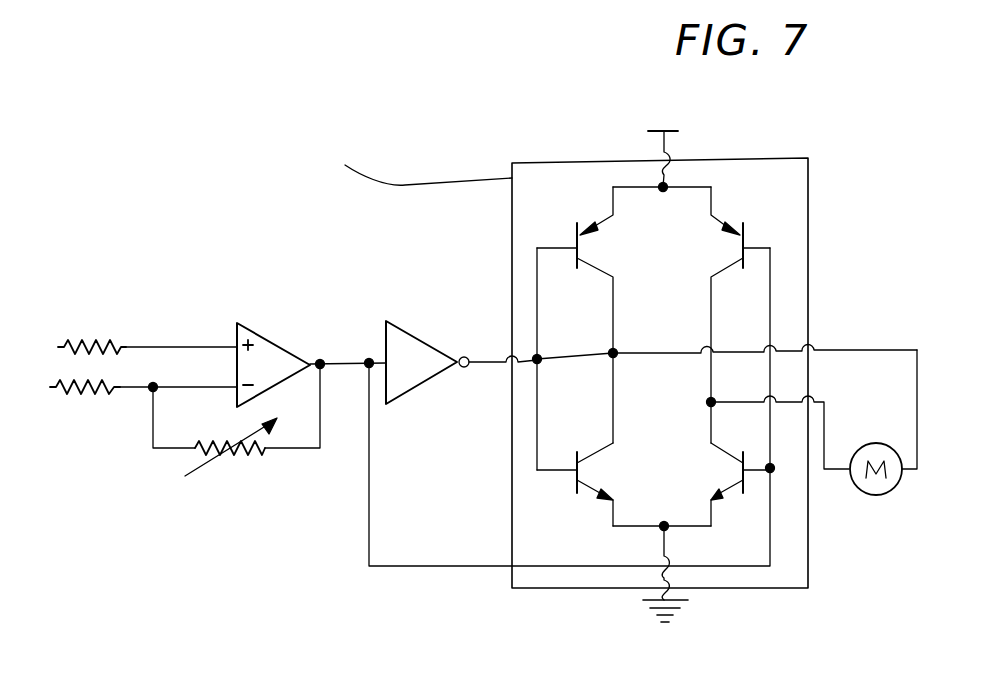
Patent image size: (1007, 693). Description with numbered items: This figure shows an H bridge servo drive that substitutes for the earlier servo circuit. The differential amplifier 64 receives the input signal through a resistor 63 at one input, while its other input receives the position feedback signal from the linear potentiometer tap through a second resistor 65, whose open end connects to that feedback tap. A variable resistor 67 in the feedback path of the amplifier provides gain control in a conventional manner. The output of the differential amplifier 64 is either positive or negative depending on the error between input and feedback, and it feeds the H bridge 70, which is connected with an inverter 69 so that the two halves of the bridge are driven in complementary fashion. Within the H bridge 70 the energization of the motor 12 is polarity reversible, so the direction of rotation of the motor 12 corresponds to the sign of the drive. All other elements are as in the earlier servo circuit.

The motor 12 is at (874, 497).
The resistor 63 is at (86, 347).
The differential amplifier 64 is at (252, 326).
The resistor 65 is at (90, 392).
The variable resistor 67 is at (242, 452).
The inverter 69 is at (432, 378).
The H bridge 70 is at (779, 178).